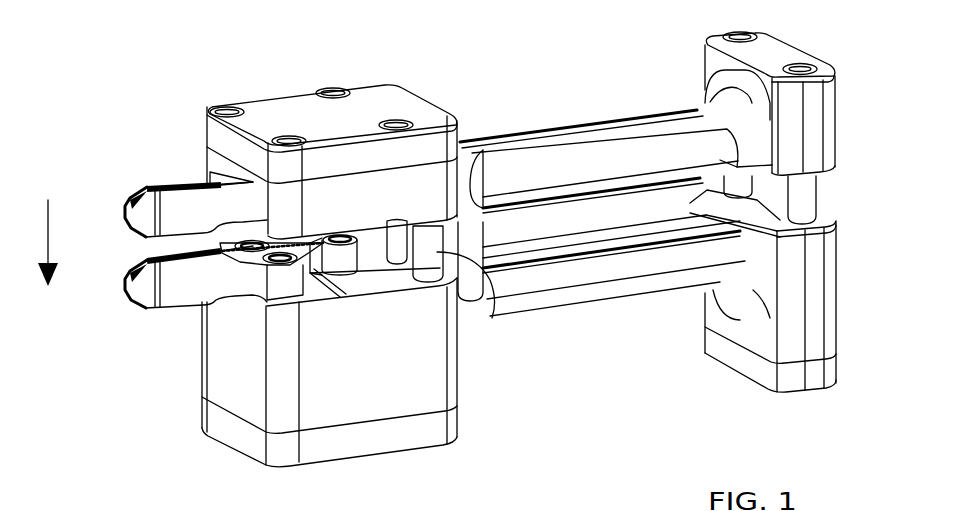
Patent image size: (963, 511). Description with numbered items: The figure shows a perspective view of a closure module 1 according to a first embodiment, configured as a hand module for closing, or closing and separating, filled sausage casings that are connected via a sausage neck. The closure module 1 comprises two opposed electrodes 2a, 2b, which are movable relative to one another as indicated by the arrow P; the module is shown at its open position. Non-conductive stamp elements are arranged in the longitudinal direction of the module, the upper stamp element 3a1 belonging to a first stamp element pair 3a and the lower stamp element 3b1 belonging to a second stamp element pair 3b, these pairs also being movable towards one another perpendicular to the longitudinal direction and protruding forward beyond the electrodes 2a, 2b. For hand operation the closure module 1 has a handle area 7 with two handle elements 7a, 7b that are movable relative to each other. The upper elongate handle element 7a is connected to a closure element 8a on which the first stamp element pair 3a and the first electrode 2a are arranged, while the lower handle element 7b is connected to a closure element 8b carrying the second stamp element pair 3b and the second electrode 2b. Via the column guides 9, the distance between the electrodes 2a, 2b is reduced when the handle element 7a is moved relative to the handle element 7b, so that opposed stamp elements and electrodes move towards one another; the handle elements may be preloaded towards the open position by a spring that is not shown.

The closure module 1 is at (475, 60).
The first electrode 2a is at (173, 180).
The second electrode 2b is at (201, 302).
The first stamp element pair 3a is at (122, 189).
The second stamp element pair 3b is at (132, 313).
The upper stamp element 3a1 is at (180, 209).
The lower stamp element 3b1 is at (185, 293).
The handle area 7 is at (630, 112).
The upper handle element 7a is at (560, 150).
The lower handle element 7b is at (630, 272).
The closure element 8a is at (290, 104).
The closure element 8b is at (400, 398).
The column guides 9 is at (483, 275).